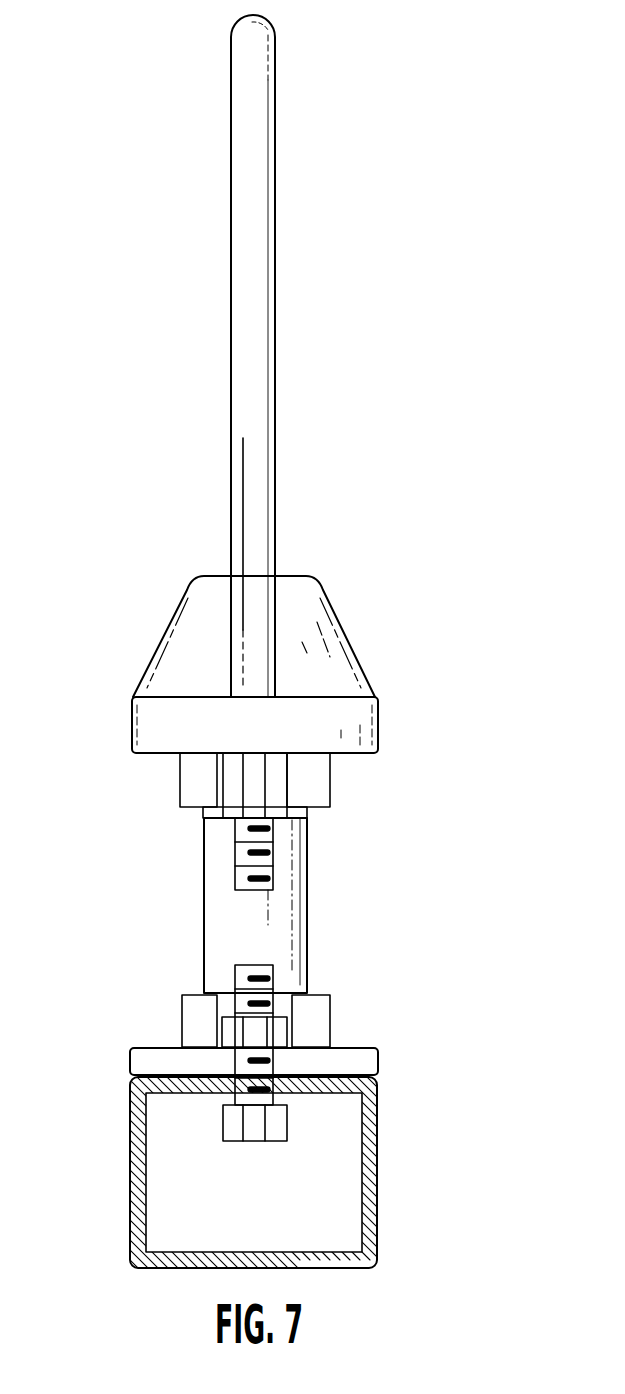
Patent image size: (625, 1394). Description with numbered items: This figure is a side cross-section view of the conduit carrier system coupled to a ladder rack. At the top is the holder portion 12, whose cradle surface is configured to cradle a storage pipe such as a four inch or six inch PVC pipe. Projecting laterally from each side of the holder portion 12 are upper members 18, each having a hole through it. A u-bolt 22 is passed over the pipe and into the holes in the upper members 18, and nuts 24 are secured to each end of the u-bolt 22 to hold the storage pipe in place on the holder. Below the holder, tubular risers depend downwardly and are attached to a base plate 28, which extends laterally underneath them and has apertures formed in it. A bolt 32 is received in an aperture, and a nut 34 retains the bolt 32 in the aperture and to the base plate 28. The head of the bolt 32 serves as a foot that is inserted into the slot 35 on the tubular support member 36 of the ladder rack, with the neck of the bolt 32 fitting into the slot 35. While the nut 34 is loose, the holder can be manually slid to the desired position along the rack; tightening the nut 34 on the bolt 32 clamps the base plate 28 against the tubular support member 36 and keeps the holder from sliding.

The holder portion 12 is at (183, 633).
The upper members 18 is at (162, 748).
The u-bolt 22 is at (231, 307).
The nuts 24 is at (292, 808).
The base plate 28 is at (148, 1047).
The bolt 32 is at (222, 1120).
The nut 34 is at (232, 1032).
The slot 35 is at (276, 1085).
The tubular support member 36 is at (130, 1135).